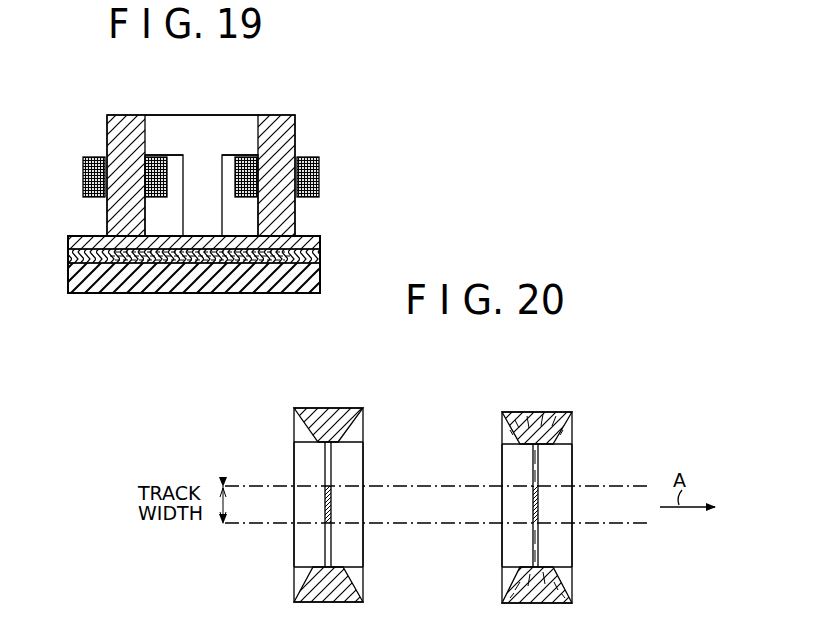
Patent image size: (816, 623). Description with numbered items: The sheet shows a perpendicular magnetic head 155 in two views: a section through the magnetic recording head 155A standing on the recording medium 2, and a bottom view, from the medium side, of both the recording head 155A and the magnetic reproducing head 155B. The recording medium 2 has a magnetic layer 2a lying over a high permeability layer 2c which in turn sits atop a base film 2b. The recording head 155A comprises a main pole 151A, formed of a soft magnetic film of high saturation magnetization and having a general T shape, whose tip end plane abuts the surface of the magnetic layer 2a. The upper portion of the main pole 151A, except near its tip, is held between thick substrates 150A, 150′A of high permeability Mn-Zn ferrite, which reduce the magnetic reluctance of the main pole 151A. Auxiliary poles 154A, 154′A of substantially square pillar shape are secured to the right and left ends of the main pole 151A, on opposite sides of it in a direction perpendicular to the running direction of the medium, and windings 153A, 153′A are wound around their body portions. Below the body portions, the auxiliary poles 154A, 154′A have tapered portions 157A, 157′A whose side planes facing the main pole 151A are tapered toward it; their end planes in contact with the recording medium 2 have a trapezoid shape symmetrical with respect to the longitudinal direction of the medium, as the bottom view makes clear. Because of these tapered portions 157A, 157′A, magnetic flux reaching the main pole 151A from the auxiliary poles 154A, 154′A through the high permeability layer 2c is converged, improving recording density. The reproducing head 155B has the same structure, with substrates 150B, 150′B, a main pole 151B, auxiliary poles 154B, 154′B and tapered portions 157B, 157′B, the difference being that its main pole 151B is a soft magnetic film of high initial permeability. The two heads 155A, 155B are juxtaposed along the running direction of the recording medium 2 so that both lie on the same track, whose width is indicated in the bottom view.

In FIG. 19, the recording medium 2 is at (212, 277).
In FIG. 19, the magnetic layer 2a is at (310, 245).
In FIG. 19, the base film 2b is at (316, 281).
In FIG. 19, the high permeability layer 2c is at (316, 258).
In FIG. 20, the substrate 150A is at (565, 472).
In FIG. 20, the substrate 150′A is at (502, 456).
In FIG. 20, the substrate 150B is at (358, 470).
In FIG. 20, the substrate 150′B is at (305, 462).
In FIG. 19, the main pole 151A is at (230, 125).
In FIG. 20, the main pole 151A is at (540, 515).
In FIG. 20, the main pole 151B is at (331, 510).
In FIG. 19, the winding 153A is at (318, 178).
In FIG. 19, the winding 153′A is at (84, 162).
In FIG. 19, the auxiliary pole 154A is at (290, 132).
In FIG. 20, the auxiliary pole 154A is at (565, 436).
In FIG. 19, the auxiliary pole 154′A is at (120, 128).
In FIG. 20, the auxiliary pole 154′A is at (508, 584).
In FIG. 20, the auxiliary pole 154B is at (358, 432).
In FIG. 20, the auxiliary pole 154′B is at (302, 583).
In FIG. 20, the magnetic head 155 is at (544, 473).
In FIG. 19, the magnetic recording head 155A is at (270, 103).
In FIG. 20, the magnetic recording head 155A is at (544, 473).
In FIG. 20, the magnetic reproducing head 155B is at (330, 483).
In FIG. 20, the tapered portion 157A is at (555, 422).
In FIG. 20, the tapered portion 157′A is at (555, 578).
In FIG. 20, the tapered portion 157B is at (345, 418).
In FIG. 20, the tapered portion 157′B is at (345, 585).